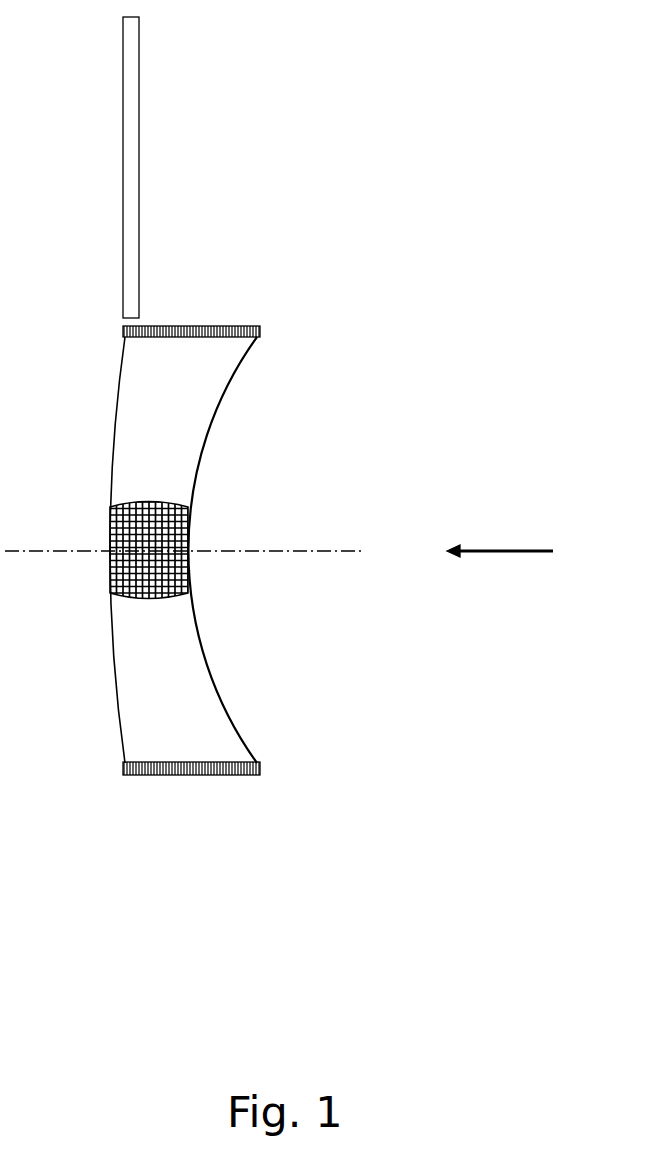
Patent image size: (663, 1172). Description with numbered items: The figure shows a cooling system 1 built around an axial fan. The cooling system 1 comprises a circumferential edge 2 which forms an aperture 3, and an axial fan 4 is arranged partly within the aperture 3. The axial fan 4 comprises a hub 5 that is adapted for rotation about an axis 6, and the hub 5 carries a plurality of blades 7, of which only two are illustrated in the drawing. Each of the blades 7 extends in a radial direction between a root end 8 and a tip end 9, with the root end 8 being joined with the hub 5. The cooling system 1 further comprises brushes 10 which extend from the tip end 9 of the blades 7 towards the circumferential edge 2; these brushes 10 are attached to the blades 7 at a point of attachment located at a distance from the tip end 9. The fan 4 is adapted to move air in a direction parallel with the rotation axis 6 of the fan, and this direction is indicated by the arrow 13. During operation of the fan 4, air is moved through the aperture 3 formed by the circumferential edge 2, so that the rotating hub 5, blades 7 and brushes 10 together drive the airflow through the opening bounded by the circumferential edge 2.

The cooling system 1 is at (356, 151).
The circumferential edge 2 is at (133, 252).
The aperture 3 is at (123, 328).
The axial fan 4 is at (211, 587).
The hub 5 is at (175, 532).
The axis 6 is at (303, 552).
The blades 7 is at (220, 377).
The root end 8 is at (100, 590).
The tip end 9 is at (116, 768).
The brushes 10 is at (236, 325).
The arrow 13 is at (518, 553).